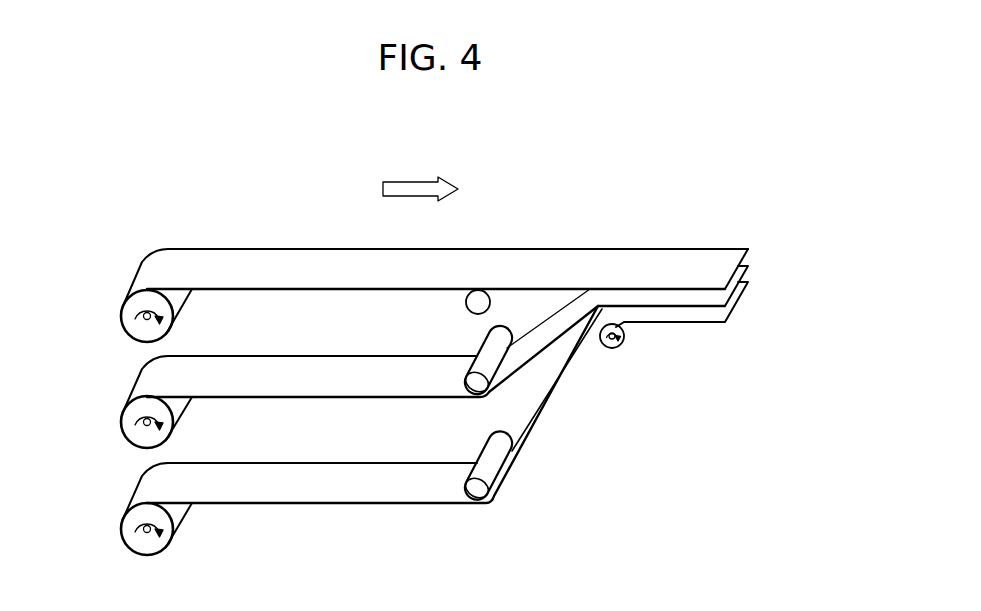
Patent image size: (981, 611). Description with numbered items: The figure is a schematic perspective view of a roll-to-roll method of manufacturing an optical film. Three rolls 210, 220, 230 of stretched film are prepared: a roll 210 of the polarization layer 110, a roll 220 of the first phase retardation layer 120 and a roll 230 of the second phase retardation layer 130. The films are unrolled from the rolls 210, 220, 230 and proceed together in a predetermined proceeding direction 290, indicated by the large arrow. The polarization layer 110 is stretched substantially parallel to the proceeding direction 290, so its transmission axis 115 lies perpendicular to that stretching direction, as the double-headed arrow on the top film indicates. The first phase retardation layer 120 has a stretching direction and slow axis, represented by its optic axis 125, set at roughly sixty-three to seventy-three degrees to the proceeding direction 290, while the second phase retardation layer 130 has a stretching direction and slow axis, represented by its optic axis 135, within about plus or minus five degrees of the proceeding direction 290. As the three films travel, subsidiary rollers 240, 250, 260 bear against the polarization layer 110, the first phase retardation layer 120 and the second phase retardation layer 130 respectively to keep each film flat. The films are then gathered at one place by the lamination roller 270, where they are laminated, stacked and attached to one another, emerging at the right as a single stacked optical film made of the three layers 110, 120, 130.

The polarization layer 110 is at (745, 249).
The transmission axis 115 is at (218, 280).
The first phase retardation layer 120 is at (750, 267).
The optic axis 125 is at (234, 390).
The second phase retardation layer 130 is at (734, 316).
The optic axis 135 is at (267, 483).
The roll 210 is at (121, 318).
The roll 220 is at (121, 424).
The roll 230 is at (121, 531).
The subsidiary roller 240 is at (467, 304).
The subsidiary roller 250 is at (476, 393).
The subsidiary roller 260 is at (478, 501).
The lamination roller 270 is at (616, 349).
The proceeding direction 290 is at (393, 181).